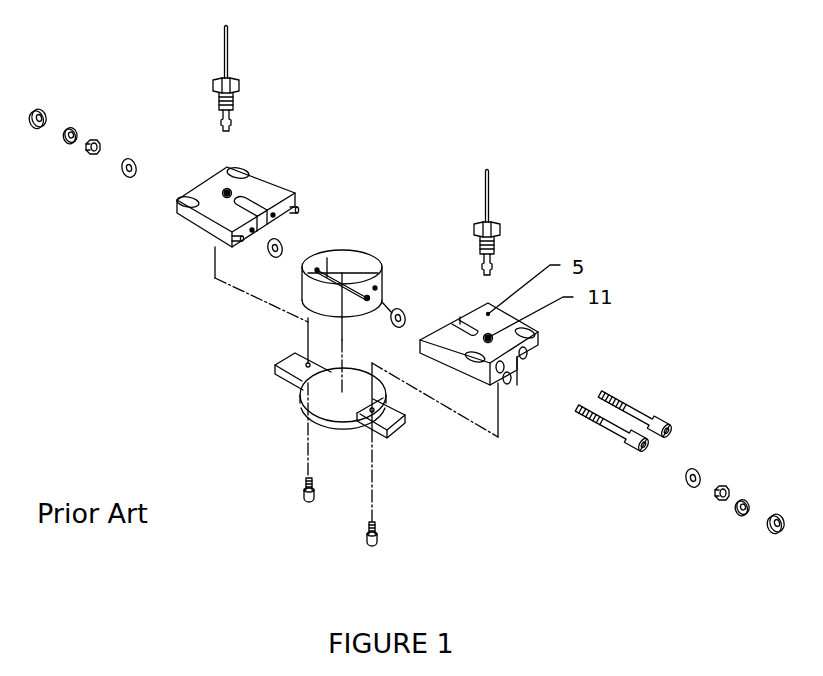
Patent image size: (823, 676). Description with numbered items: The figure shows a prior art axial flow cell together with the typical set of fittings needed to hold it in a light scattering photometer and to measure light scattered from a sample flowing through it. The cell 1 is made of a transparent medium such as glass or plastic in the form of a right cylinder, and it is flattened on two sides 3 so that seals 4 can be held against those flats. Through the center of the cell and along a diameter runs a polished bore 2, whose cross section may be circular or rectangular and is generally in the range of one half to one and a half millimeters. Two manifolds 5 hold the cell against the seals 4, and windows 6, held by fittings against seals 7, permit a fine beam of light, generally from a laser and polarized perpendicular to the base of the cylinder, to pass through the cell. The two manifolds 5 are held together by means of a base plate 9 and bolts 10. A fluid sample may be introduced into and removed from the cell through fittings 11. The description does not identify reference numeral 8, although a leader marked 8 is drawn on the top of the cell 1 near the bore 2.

The cell 1 is at (276, 304).
The polished bore 2 is at (268, 316).
The flattened sides 3 is at (380, 247).
The seals 4 is at (400, 309).
The manifolds 5 is at (291, 163).
The windows 6 is at (415, 321).
The seals 7 is at (422, 323).
The ring bore 8 is at (336, 257).
The base plate 9 is at (304, 402).
The bolts 10 is at (623, 432).
The fittings 11 is at (306, 116).